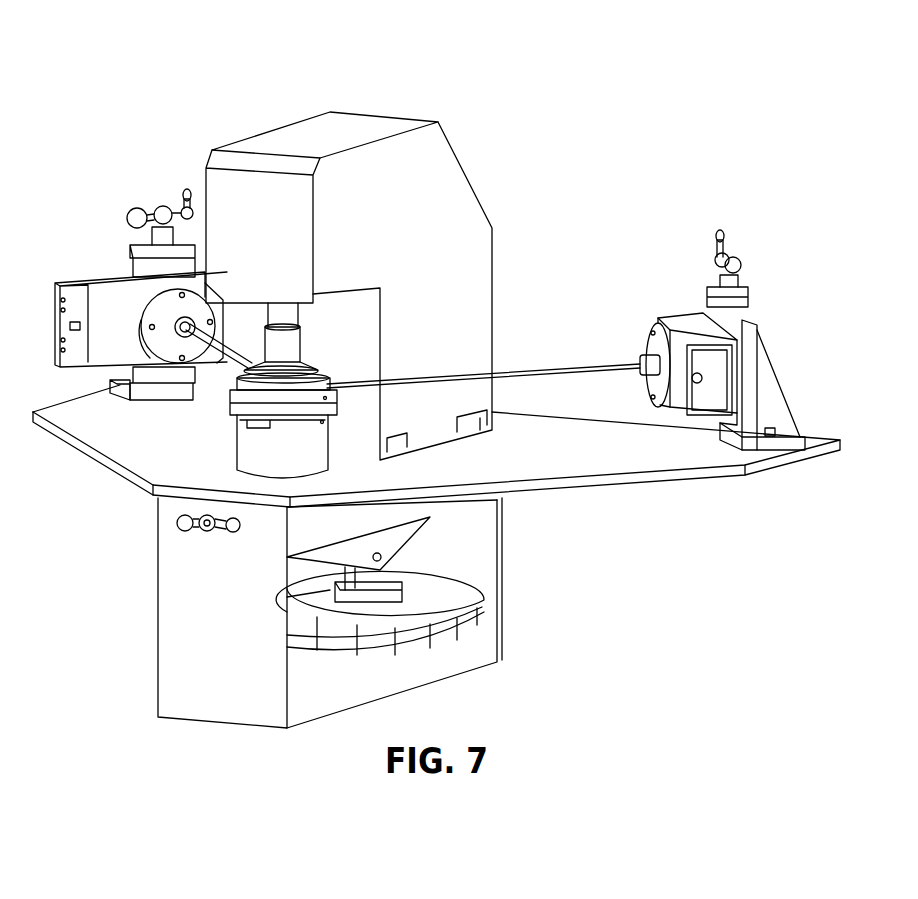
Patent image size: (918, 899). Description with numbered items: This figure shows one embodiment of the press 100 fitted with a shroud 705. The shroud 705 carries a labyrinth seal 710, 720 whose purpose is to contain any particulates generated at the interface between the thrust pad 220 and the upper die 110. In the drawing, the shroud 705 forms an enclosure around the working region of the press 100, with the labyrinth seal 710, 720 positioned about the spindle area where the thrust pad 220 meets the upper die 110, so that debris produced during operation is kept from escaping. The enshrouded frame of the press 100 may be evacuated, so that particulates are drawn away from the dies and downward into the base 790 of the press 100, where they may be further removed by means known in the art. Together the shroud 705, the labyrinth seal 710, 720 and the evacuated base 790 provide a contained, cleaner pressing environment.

The press 100 is at (297, 80).
The shroud 705 is at (465, 175).
The thrust pad 220 is at (498, 303).
The labyrinth seal 710 is at (298, 322).
The labyrinth seal 720 is at (300, 350).
The upper die 110 is at (227, 398).
The base 790 is at (473, 555).